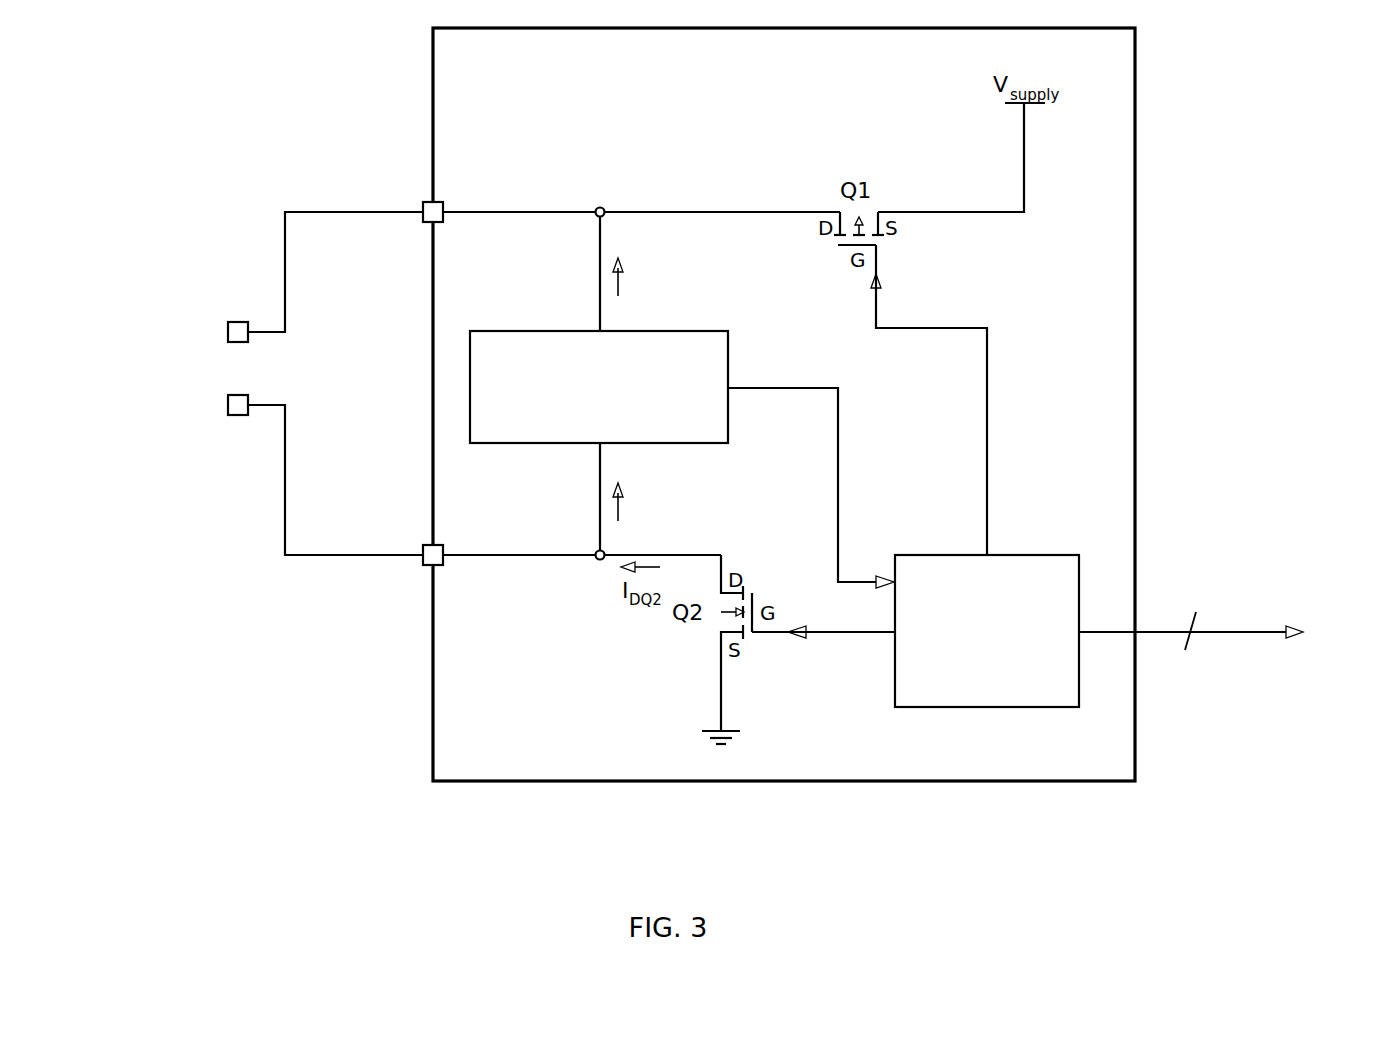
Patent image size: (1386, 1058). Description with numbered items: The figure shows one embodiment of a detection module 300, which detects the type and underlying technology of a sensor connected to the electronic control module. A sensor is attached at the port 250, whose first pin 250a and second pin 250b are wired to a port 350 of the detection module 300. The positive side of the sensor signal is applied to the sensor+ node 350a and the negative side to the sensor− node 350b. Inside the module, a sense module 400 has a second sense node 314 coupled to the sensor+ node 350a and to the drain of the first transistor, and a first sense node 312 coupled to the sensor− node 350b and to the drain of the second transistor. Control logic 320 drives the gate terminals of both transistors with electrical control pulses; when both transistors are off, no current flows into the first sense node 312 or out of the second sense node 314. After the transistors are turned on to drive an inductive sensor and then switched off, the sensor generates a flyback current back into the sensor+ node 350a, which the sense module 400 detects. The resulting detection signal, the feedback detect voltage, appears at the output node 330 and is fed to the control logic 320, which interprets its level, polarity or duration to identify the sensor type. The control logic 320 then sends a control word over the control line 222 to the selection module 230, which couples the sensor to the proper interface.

The detection module 300 is at (735, 98).
The port 250 is at (177, 367).
The first pin 250a is at (228, 327).
The second pin 250b is at (228, 411).
The port 350 is at (396, 391).
The sensor+ node 350a is at (424, 206).
The sensor− node 350b is at (424, 562).
The second sense node 314 is at (600, 300).
The first sense node 312 is at (600, 463).
The sense module 400 is at (599, 387).
The output node 330 is at (840, 480).
The control logic 320 is at (987, 631).
The control line 222 is at (1245, 632).
The selection module 230 is at (1349, 633).